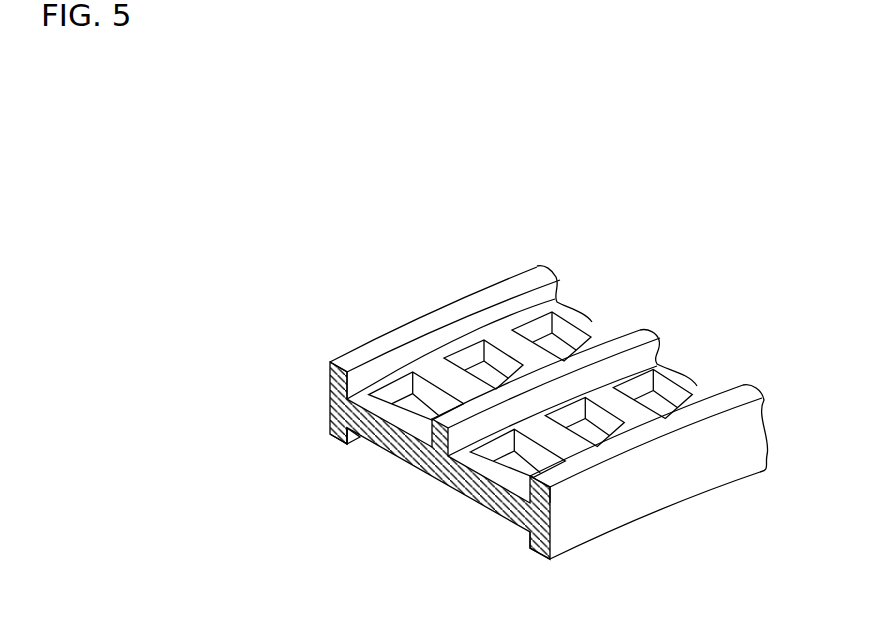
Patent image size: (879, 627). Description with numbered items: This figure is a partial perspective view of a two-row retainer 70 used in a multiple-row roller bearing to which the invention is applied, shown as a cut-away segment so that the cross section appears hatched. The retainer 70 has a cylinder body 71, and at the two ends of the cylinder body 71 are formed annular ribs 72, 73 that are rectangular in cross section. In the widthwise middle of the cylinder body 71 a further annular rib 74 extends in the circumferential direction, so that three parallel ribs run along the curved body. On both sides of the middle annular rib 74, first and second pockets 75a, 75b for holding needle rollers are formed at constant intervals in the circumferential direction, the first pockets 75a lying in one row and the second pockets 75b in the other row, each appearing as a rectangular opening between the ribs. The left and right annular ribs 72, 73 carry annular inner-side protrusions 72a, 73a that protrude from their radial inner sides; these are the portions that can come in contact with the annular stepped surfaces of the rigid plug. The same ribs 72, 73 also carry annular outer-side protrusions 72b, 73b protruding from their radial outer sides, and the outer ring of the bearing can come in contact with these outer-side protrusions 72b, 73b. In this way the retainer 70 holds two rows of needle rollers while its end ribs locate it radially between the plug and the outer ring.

The retainer 70 is at (697, 351).
The cylinder body 71 is at (472, 493).
The annular rib 72 is at (553, 515).
The annular inner-side protrusion 72a is at (553, 545).
The annular outer-side protrusion 72b is at (551, 498).
The annular rib 73 is at (340, 400).
The annular inner-side protrusion 73a is at (340, 430).
The annular outer-side protrusion 73b is at (331, 376).
The annular rib 74 is at (434, 444).
The first pockets 75a is at (642, 388).
The second pockets 75b is at (572, 338).